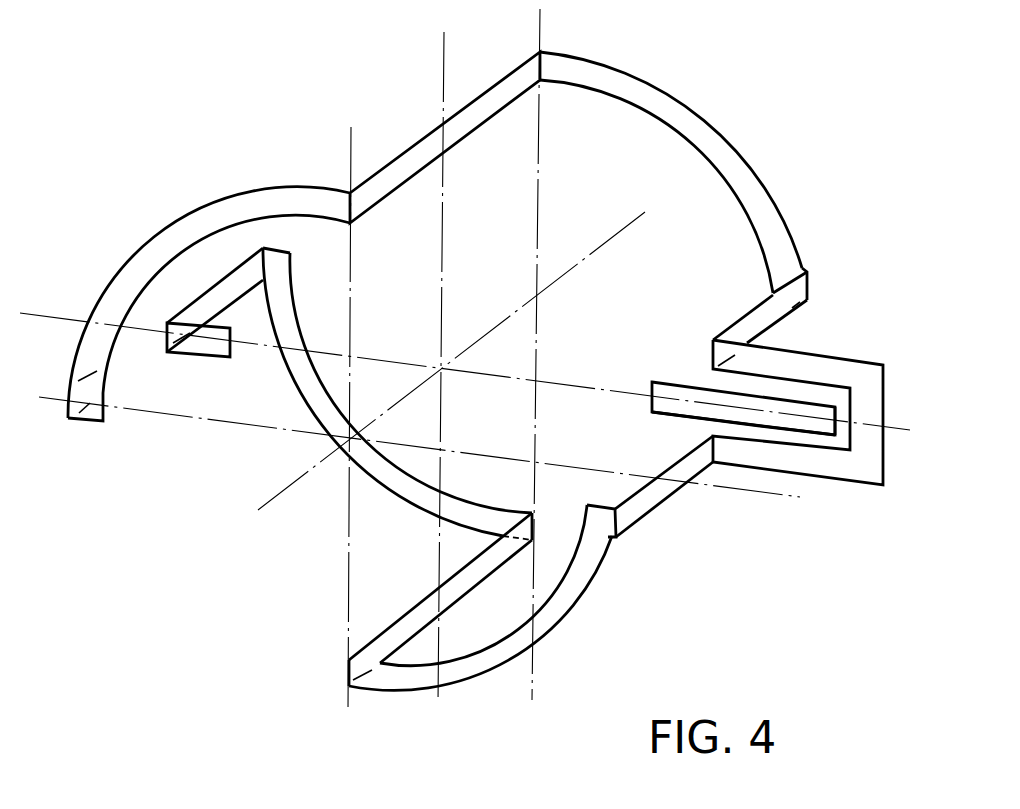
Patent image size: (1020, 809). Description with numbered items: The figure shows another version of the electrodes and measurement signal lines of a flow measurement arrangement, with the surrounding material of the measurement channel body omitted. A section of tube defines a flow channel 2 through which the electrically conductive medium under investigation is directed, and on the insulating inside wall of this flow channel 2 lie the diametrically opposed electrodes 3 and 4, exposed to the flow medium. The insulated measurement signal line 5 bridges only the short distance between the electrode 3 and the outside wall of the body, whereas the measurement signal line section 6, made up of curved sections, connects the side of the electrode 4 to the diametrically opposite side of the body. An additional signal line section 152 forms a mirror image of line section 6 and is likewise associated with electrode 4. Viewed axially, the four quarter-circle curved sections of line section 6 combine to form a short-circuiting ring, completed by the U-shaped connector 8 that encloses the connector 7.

The flow channel 2 is at (496, 347).
The electrode 3 is at (652, 405).
The electrode 4 is at (230, 348).
The measurement signal line 5 is at (733, 405).
The measurement signal line section 6 is at (661, 86).
The connector 7 is at (820, 425).
The U-shaped connector 8 is at (870, 410).
The signal line section 152 is at (550, 623).